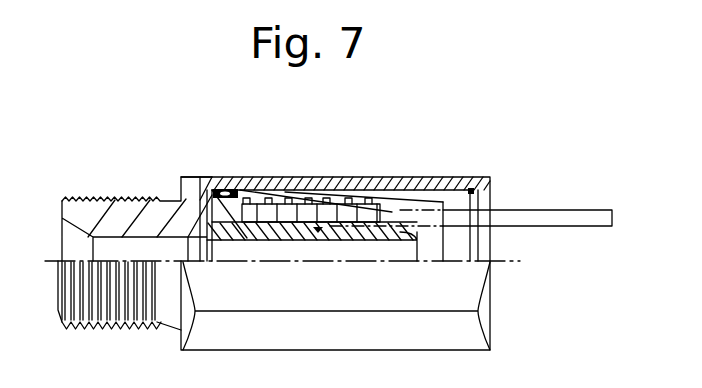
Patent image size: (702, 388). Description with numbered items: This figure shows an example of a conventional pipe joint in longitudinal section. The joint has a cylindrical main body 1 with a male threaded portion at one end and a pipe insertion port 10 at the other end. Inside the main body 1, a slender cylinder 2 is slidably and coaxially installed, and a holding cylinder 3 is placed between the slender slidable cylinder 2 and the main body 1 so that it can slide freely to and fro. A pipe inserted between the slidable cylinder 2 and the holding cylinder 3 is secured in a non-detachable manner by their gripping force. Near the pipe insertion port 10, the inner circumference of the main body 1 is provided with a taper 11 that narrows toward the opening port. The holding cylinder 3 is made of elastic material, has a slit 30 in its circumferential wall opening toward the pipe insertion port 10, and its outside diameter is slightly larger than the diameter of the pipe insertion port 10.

The main body 1 is at (200, 177).
The slender cylinder 2 is at (386, 236).
The holding cylinder 3 is at (328, 204).
The pipe insertion port 10 is at (497, 243).
The taper 11 is at (430, 192).
The slit 30 is at (280, 197).